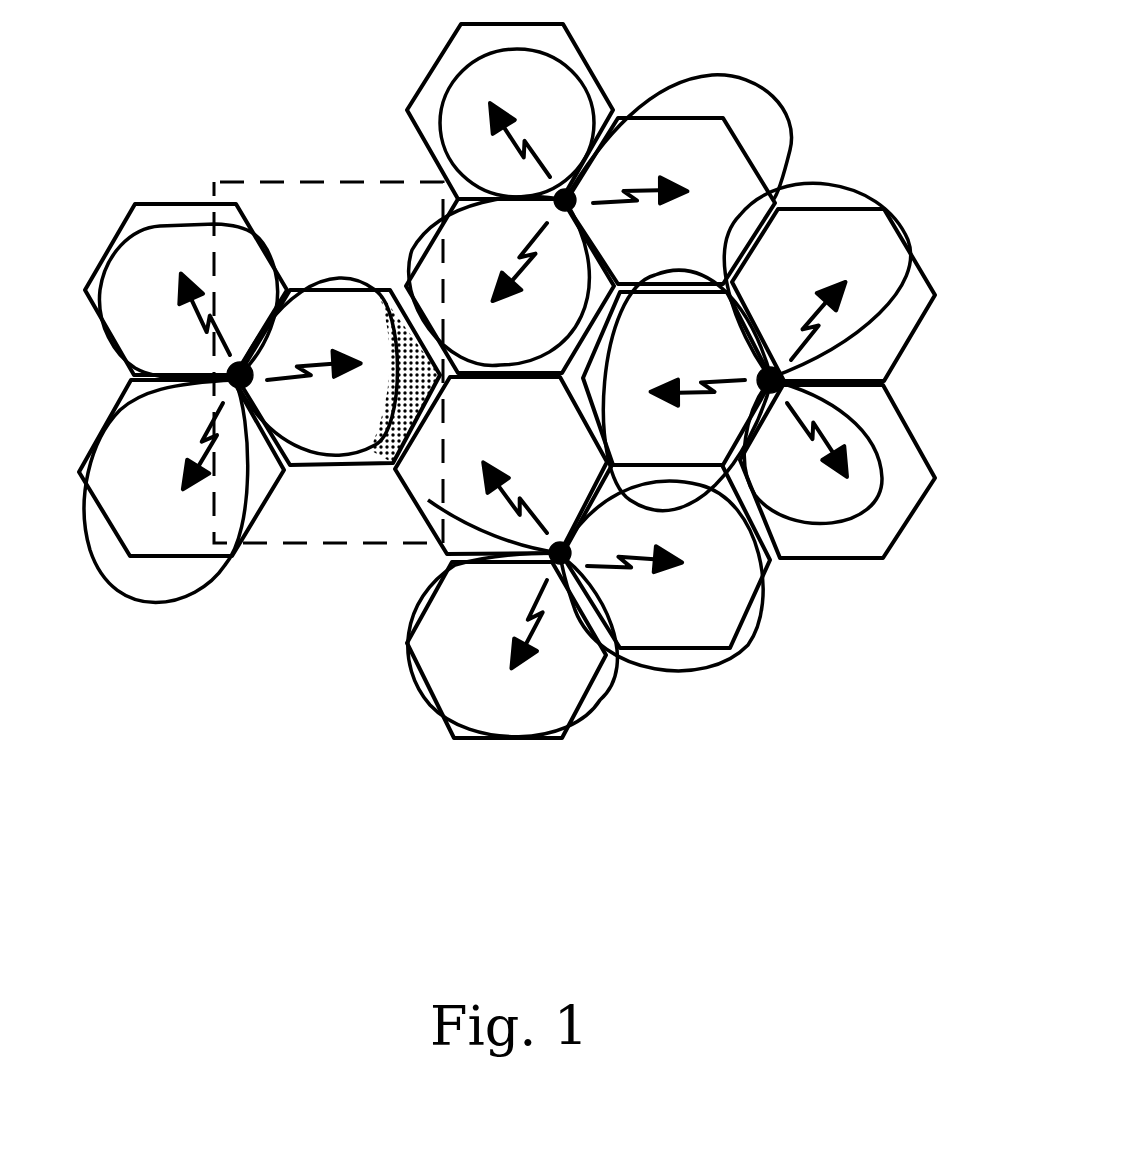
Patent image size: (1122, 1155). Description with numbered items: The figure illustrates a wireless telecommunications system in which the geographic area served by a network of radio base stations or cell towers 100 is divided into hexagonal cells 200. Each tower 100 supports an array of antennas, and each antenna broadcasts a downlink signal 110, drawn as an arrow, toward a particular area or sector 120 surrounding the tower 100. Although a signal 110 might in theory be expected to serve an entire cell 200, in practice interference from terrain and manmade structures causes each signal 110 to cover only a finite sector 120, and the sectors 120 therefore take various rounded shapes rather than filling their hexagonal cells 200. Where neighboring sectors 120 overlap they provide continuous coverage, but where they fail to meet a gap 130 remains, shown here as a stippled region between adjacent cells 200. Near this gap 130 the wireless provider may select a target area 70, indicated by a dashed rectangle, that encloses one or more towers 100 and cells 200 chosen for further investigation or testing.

The target area 70 is at (253, 547).
The cell tower 100 is at (262, 380).
The downlink signal 110 is at (700, 380).
The sector 120 is at (837, 183).
The gap 130 is at (353, 470).
The hexagonal cell 200 is at (407, 113).